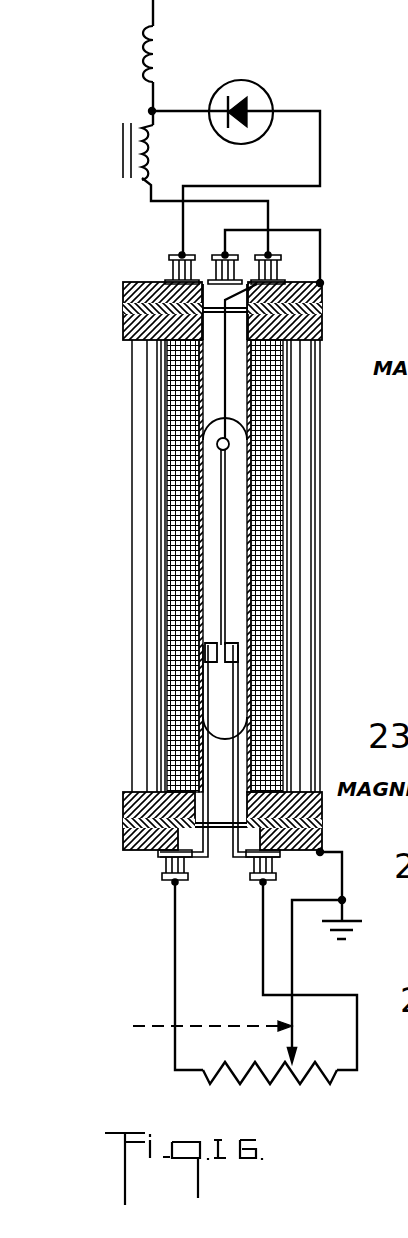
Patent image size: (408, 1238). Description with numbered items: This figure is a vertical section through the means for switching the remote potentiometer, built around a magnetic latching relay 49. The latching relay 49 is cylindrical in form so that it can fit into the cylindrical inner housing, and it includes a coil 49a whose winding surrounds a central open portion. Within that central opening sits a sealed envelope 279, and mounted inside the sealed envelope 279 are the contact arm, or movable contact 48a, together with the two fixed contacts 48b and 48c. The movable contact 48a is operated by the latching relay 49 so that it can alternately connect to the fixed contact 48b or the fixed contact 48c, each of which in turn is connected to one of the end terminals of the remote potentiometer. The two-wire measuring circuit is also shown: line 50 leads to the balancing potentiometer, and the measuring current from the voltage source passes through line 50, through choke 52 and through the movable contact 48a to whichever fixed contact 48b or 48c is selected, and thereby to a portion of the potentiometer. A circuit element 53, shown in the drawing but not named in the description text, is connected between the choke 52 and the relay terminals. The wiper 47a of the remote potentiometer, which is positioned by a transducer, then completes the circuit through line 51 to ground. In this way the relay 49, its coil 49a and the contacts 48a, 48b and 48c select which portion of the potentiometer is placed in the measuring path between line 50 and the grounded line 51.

The line 50 is at (150, 9).
The choke 52 is at (140, 178).
The diode 53 is at (247, 86).
The magnetic latching relay 49 is at (207, 568).
The coil 49a is at (257, 480).
The sealed envelope 279 is at (233, 426).
The movable contact 48a is at (222, 510).
The fixed contact 48b is at (238, 650).
The fixed contact 48c is at (210, 649).
The line 51 is at (346, 902).
The wiper 47a is at (290, 1042).